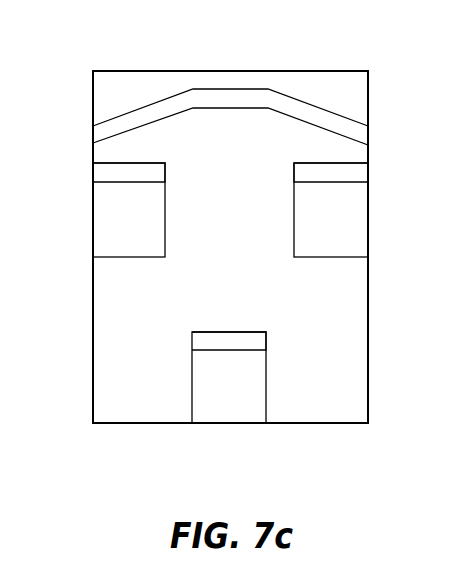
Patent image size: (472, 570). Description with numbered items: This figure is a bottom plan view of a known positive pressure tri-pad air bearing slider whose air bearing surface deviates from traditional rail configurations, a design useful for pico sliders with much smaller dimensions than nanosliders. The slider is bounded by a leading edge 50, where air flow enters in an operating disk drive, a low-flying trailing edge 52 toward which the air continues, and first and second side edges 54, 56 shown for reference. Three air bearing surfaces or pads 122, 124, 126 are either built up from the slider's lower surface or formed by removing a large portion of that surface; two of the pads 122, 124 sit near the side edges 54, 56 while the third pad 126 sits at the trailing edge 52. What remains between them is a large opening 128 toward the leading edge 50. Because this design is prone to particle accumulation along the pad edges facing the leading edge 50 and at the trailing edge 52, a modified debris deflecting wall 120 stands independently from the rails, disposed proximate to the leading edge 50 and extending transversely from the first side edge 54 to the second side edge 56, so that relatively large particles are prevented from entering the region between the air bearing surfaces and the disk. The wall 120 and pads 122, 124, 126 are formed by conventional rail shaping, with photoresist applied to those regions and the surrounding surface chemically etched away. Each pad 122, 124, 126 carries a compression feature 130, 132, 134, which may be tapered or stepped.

The leading edge 50 is at (330, 71).
The trailing edge 52 is at (320, 423).
The first side edge 54 is at (93, 333).
The second side edge 56 is at (368, 333).
The debris deflecting wall 120 is at (220, 95).
The air bearing surface or pad 122 is at (100, 218).
The air bearing surface or pad 124 is at (362, 220).
The air bearing surface or pad 126 is at (225, 423).
The large opening 128 is at (248, 271).
The compression feature 130 is at (100, 172).
The compression feature 132 is at (362, 172).
The compression feature 134 is at (260, 341).